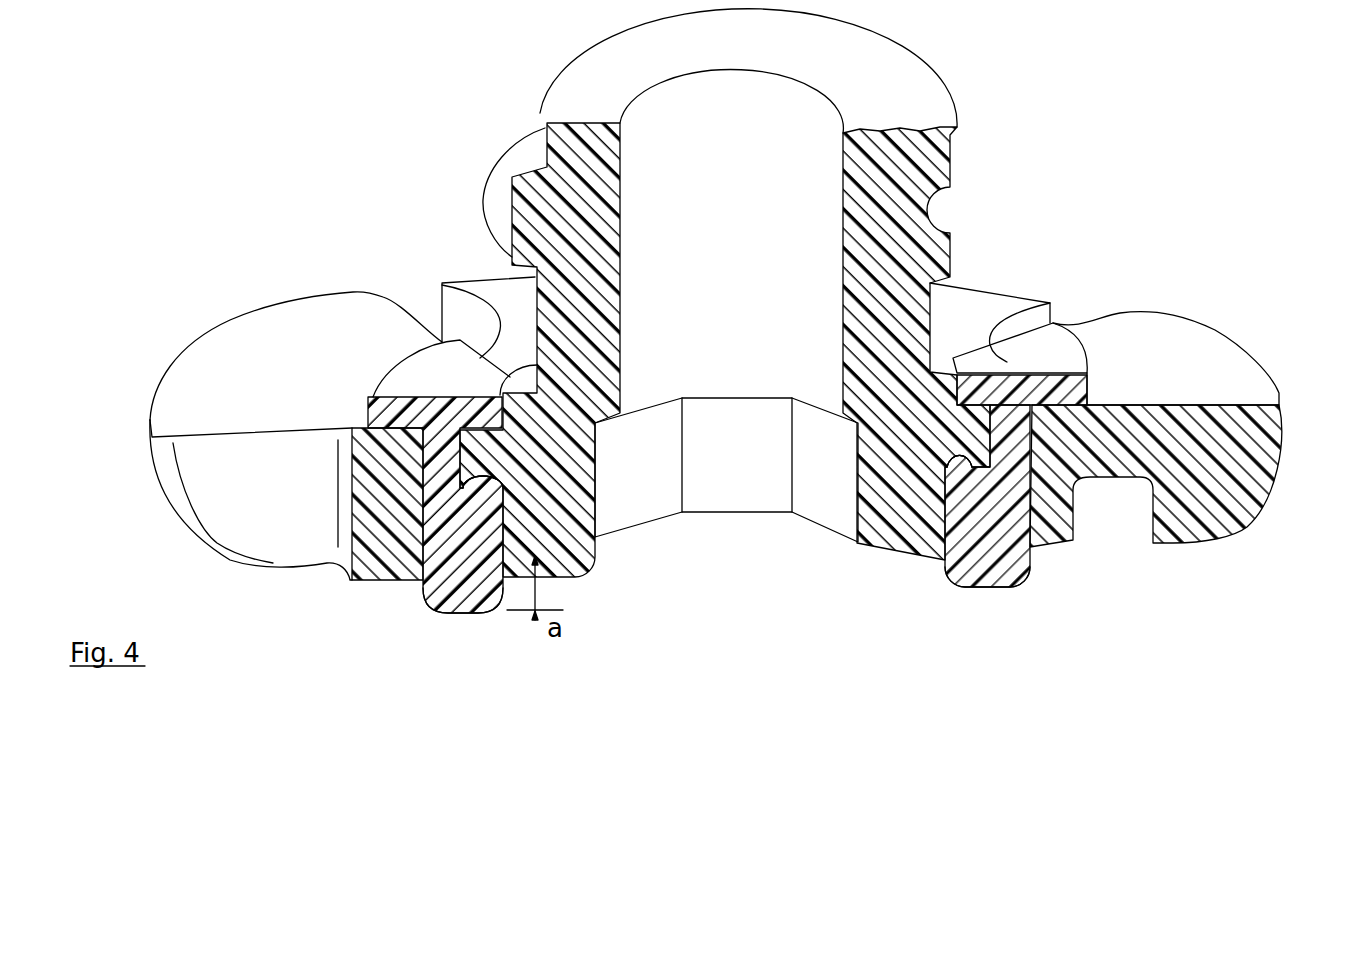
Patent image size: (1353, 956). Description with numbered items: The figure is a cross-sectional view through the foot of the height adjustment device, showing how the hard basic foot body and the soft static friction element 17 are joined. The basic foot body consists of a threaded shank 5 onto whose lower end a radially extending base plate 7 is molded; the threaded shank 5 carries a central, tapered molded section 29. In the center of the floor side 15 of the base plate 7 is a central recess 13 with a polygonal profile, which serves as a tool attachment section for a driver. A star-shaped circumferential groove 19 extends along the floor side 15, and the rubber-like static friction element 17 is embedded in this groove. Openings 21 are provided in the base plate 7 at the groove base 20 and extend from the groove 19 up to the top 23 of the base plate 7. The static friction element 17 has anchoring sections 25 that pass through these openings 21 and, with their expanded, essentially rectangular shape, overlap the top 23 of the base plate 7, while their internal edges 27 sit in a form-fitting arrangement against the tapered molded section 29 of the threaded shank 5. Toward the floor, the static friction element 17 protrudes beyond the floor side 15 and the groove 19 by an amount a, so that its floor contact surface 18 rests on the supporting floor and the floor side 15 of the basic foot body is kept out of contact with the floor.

The threaded shank 5 is at (957, 143).
The base plate 7 is at (1279, 433).
The central recess 13 is at (757, 474).
The floor side 15 is at (593, 537).
The static friction element 17 is at (1067, 537).
The floor contact surface 18 is at (465, 613).
The circumferential groove 19 is at (940, 545).
The groove base 20 is at (460, 488).
The openings 21 is at (1047, 443).
The top 23 is at (1157, 337).
The anchoring sections 25 is at (403, 383).
The internal edges 27 is at (967, 387).
The tapered molded section 29 is at (522, 387).